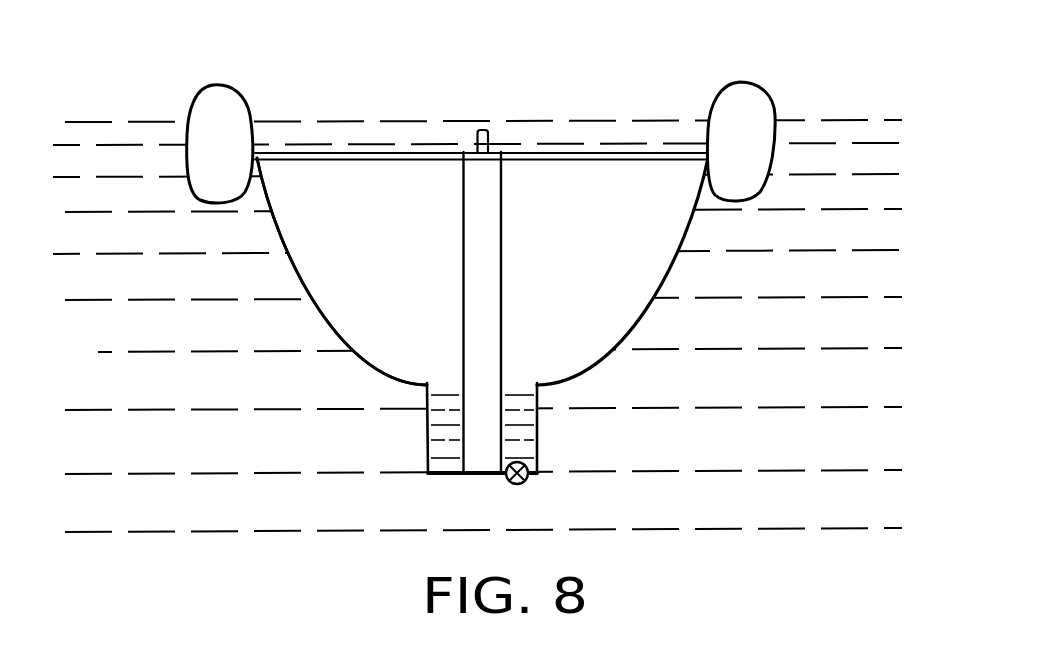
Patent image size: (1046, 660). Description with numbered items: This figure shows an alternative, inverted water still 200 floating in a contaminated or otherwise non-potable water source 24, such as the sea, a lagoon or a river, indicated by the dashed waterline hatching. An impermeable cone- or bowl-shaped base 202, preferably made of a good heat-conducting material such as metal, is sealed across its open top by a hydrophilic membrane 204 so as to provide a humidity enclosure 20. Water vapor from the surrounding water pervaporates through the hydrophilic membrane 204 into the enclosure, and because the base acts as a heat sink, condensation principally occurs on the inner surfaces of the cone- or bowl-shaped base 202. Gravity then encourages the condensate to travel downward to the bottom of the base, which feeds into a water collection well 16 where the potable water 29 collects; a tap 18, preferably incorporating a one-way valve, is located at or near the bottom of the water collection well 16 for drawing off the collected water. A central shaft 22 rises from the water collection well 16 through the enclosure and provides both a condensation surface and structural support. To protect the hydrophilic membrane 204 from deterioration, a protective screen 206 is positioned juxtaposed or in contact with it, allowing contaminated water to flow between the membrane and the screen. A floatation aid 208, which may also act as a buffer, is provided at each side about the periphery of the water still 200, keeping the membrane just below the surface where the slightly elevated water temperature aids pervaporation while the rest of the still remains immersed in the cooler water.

The water collection well 16 is at (537, 448).
The tap 18 is at (525, 481).
The humidity enclosure 20 is at (590, 290).
The central shaft 22 is at (503, 223).
The water source 24 is at (202, 445).
The potable water 29 is at (445, 460).
The water still 200 is at (322, 317).
The cone- or bowl-shaped base 202 is at (348, 333).
The hydrophilic membrane 204 is at (313, 162).
The protective screen 206 is at (343, 152).
The floatation aid 208 is at (218, 85).